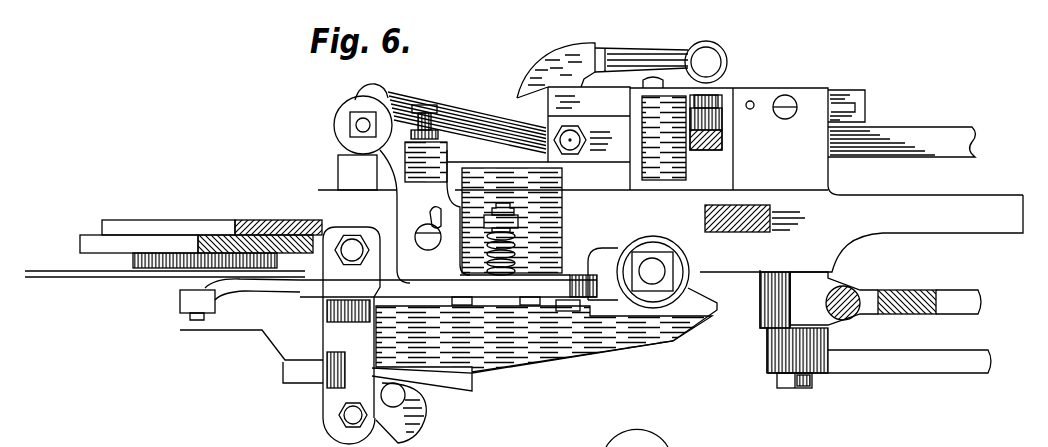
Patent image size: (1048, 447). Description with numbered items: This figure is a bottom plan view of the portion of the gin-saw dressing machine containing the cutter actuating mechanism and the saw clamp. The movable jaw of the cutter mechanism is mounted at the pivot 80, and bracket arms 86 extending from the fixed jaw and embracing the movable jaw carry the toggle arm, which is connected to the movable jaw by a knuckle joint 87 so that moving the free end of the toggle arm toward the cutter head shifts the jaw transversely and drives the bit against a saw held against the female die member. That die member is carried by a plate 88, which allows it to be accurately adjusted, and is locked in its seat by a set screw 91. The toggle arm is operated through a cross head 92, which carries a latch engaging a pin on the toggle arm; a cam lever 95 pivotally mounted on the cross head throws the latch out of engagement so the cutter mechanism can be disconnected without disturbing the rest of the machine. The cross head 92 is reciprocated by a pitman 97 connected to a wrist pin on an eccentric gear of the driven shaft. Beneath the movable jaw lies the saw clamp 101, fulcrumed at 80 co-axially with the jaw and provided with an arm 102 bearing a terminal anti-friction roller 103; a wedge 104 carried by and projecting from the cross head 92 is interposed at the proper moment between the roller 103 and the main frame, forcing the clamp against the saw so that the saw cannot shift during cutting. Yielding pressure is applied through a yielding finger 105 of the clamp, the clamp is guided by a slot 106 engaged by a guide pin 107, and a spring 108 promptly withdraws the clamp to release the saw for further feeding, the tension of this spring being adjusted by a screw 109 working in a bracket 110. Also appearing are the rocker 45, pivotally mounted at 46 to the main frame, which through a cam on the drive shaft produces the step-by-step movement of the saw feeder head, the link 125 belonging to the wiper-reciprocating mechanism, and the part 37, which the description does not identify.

The rod 37 is at (104, 243).
The rocker 45 is at (879, 298).
The pivot 46 is at (803, 388).
The pivot 80 is at (656, 282).
The bracket arms 86 is at (337, 390).
The knuckle joint 87 is at (400, 405).
The plate 88 is at (165, 261).
The set screw 91 is at (268, 263).
The cross head 92 is at (566, 90).
The cam lever 95 is at (655, 55).
The pitman 97 is at (921, 131).
The saw clamp 101 is at (505, 288).
The arm 102 is at (425, 212).
The anti-friction roller 103 is at (333, 122).
The wedge 104 is at (337, 175).
The yielding finger 105 is at (312, 284).
The slot 106 is at (428, 216).
The guide pin 107 is at (428, 248).
The spring 108 is at (513, 262).
The screw 109 is at (515, 223).
The bracket 110 is at (506, 205).
The link 125 is at (187, 220).